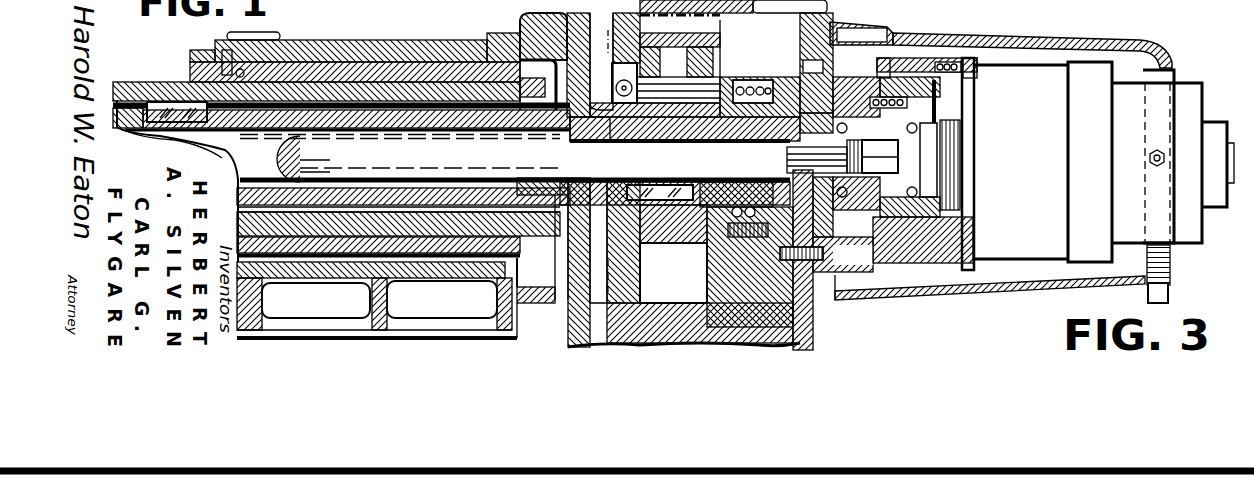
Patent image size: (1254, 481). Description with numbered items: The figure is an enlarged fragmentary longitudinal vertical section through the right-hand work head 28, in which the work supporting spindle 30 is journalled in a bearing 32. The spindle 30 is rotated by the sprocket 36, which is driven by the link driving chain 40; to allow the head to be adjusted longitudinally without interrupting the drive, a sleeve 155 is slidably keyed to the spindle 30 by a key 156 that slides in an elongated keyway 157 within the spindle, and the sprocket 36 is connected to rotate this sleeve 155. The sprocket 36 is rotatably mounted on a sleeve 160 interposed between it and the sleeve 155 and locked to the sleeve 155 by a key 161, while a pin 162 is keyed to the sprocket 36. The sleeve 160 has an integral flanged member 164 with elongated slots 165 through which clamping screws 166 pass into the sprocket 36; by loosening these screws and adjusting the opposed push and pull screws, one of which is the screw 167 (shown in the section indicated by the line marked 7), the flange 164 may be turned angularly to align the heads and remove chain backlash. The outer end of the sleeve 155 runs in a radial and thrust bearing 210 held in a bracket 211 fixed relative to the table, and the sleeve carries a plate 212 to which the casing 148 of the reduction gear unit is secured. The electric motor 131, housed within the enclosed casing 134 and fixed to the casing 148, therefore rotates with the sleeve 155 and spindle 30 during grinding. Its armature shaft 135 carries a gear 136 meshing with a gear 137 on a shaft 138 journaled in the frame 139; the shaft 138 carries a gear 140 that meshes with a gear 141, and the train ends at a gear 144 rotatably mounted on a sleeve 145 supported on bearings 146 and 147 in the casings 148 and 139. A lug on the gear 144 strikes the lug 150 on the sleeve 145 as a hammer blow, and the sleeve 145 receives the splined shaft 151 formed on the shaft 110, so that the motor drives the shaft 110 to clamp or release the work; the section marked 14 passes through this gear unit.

The section line 7- 7 is at (617, 25).
The section line 14- 14 is at (903, 312).
The head 28 is at (430, 47).
The work supporting spindle 30 is at (381, 72).
The bearing 32 is at (343, 90).
The sprocket 36 is at (705, 52).
The link driving chain 40 is at (703, 30).
The shaft 110 is at (287, 150).
The electric motor 131 is at (1093, 70).
The casing 134 is at (1040, 37).
The armature shaft 135 is at (958, 157).
The gear 136 is at (958, 137).
The gear 137 is at (958, 190).
The shaft 138 is at (958, 227).
The frame 139 is at (920, 282).
The gear 140 is at (870, 290).
The gear 141 is at (880, 156).
The gear 144 is at (853, 100).
The sleeve 145 is at (958, 173).
The bearing 146 is at (827, 255).
The bearing 147 is at (973, 110).
The casing 148 is at (838, 45).
The lug 150 is at (880, 165).
The splined shaft 151 is at (790, 158).
The sleeve 155 is at (363, 118).
The key 156 is at (180, 104).
The keyway 157 is at (450, 110).
The sleeve 160 is at (698, 193).
The key 161 is at (650, 190).
The pin 162 is at (707, 72).
The flanged member 164 is at (797, 238).
The elongated slots 165 is at (578, 285).
The clamping screws 166 is at (577, 253).
The push and pull screw 167 is at (593, 128).
The bearing 210 is at (767, 68).
The bracket 211 is at (730, 307).
The plate 212 is at (812, 325).